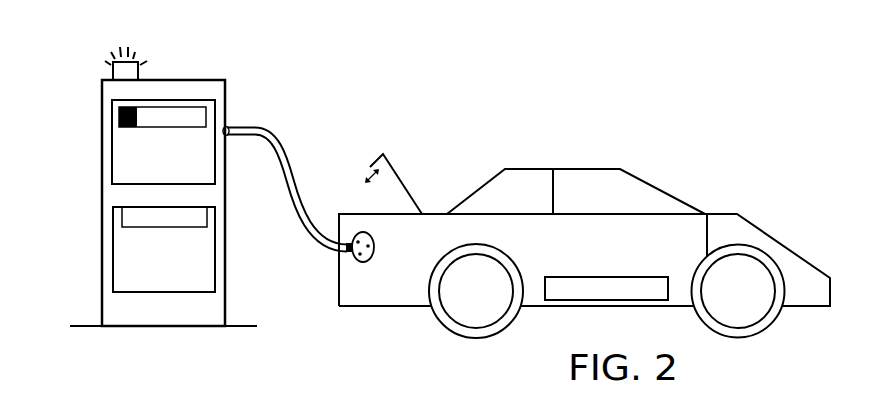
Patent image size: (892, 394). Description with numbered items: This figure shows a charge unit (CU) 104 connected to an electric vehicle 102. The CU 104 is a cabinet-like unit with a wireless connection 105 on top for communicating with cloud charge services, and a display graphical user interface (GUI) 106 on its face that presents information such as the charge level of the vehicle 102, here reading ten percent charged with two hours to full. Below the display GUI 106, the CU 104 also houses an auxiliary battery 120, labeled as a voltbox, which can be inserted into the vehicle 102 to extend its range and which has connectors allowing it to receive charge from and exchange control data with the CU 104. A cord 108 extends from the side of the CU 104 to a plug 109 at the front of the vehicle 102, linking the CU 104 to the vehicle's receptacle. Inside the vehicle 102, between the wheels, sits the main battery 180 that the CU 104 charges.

The vehicle 102 is at (582, 169).
The charge unit (CU) 104 is at (205, 80).
The wireless connection 105 is at (135, 57).
The display graphical user interface (GUI) 106 is at (112, 170).
The cord 108 is at (260, 127).
The plug 109 is at (370, 242).
The auxiliary battery 120 is at (113, 252).
The main battery 180 is at (628, 277).